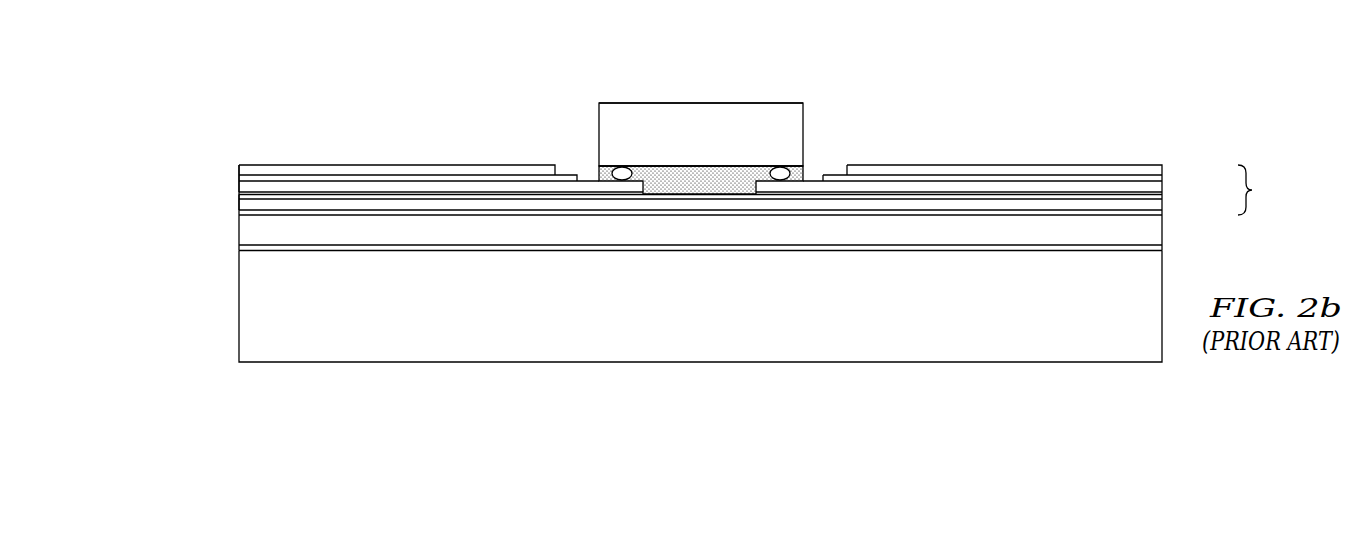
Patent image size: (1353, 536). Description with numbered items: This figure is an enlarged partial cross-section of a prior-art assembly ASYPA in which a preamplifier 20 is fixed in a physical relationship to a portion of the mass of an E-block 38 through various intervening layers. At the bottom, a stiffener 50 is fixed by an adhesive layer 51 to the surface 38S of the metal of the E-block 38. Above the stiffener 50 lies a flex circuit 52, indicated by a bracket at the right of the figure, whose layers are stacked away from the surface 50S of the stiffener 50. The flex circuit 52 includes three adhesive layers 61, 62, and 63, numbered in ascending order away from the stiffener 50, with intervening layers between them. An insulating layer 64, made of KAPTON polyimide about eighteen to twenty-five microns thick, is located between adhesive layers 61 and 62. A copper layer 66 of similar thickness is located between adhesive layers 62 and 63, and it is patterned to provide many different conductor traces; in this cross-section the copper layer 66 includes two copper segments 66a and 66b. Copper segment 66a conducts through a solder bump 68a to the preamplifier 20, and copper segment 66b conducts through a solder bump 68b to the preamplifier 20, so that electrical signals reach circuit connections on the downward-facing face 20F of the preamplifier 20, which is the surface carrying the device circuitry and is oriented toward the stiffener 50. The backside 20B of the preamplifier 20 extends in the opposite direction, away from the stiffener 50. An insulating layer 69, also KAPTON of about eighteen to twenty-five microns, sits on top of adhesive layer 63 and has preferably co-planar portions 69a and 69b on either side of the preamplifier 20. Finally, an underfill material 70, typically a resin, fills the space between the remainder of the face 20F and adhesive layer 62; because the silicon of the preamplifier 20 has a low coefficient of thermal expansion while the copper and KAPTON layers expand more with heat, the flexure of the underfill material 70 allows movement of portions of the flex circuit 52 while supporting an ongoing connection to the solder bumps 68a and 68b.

The preamplifier 20 is at (714, 147).
The backside of preamplifier 20B is at (668, 103).
The face of preamplifier 20F is at (702, 166).
The underfill material 70 is at (746, 176).
The solder bump 68a is at (599, 176).
The solder bump 68b is at (803, 168).
The insulating layer 69 is at (222, 171).
The insulating layer portion 69a is at (410, 165).
The insulating layer portion 69b is at (970, 165).
The copper layer 66 is at (152, 189).
The copper segment 66a is at (247, 187).
The copper segment 66b is at (1083, 188).
The insulating layer 64 is at (247, 203).
The adhesive layer 63 is at (1163, 176).
The adhesive layer 62 is at (1163, 195).
The adhesive layer 61 is at (1163, 212).
The flex circuit 52 is at (1262, 190).
The stiffener 50 is at (548, 236).
The surface of stiffener 50S is at (935, 217).
The adhesive layer 51 is at (407, 250).
The E-block 38 is at (714, 342).
The surface of E-block 38S is at (1060, 251).
The prior art assembly ASYPA is at (893, 81).